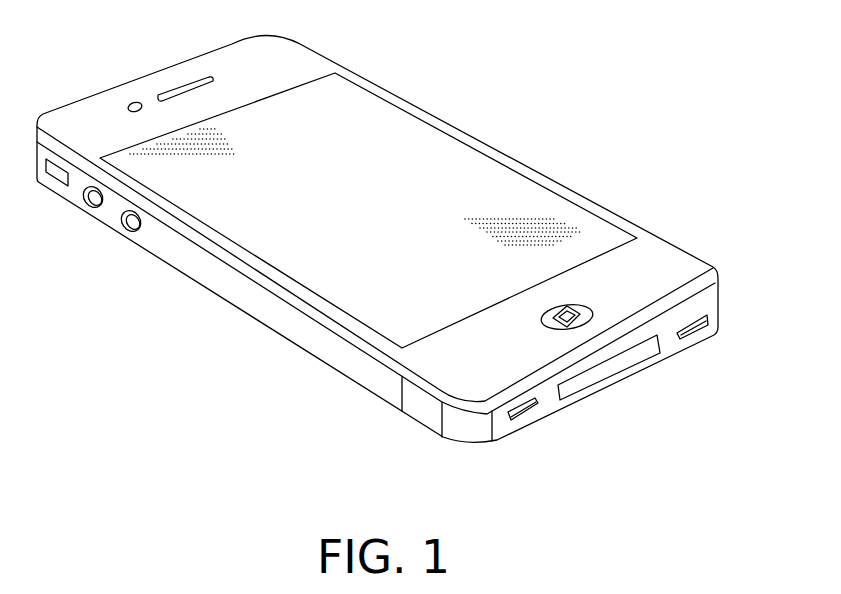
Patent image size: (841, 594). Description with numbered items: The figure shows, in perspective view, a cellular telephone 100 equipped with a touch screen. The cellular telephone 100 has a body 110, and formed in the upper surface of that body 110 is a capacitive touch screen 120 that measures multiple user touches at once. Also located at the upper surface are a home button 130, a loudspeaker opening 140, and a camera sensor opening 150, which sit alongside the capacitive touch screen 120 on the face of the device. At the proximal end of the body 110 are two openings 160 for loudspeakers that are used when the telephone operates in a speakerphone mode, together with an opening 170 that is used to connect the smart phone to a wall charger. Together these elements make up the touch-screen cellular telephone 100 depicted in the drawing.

The cellular telephone 100 is at (228, 543).
The body 110 is at (223, 284).
The capacitive touch screen 120 is at (462, 154).
The home button 130 is at (563, 316).
The loudspeaker opening 140 is at (183, 80).
The camera sensor opening 150 is at (131, 105).
The openings 160 is at (531, 410).
The opening 170 is at (605, 372).